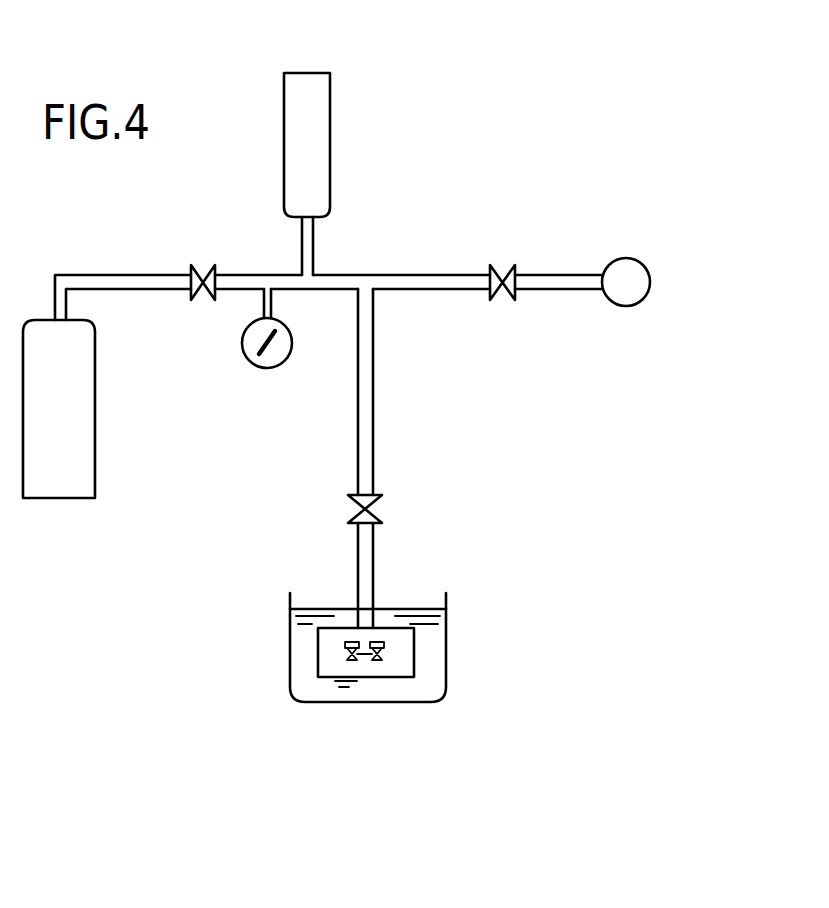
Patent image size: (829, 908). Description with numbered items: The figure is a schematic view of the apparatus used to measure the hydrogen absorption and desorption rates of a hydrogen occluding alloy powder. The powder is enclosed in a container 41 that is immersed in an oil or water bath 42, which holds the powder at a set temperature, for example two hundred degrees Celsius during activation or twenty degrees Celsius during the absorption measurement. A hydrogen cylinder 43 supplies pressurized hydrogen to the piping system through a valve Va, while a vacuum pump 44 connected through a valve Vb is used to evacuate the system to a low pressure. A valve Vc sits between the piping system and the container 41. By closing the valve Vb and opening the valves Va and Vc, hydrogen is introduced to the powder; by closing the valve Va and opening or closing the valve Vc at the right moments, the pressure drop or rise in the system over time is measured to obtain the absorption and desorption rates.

The container 41 is at (404, 650).
The bath 42 is at (402, 690).
The hydrogen cylinder 43 is at (42, 482).
The vacuum pump 44 is at (633, 306).
The valve Va is at (210, 266).
The valve Vb is at (511, 266).
The valve Vc is at (384, 509).